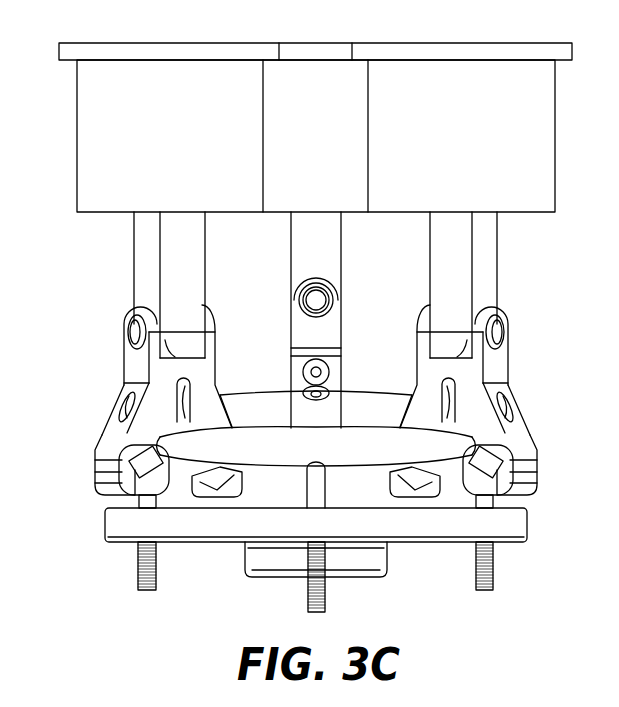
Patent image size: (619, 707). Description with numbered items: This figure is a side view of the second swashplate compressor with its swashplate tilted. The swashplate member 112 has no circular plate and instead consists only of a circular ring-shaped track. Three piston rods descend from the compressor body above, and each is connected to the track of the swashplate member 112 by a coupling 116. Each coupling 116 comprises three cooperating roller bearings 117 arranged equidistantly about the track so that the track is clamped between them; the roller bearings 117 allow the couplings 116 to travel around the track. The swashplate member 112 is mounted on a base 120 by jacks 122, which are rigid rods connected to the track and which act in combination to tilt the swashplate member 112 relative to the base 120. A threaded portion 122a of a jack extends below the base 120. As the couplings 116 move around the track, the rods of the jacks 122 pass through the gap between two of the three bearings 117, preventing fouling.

The swashplate member 112 is at (374, 397).
The coupling 116 is at (500, 362).
The roller bearing 117 is at (520, 437).
The base 120 is at (523, 522).
The jack 122 is at (310, 488).
The threaded stud portion 122a is at (494, 568).